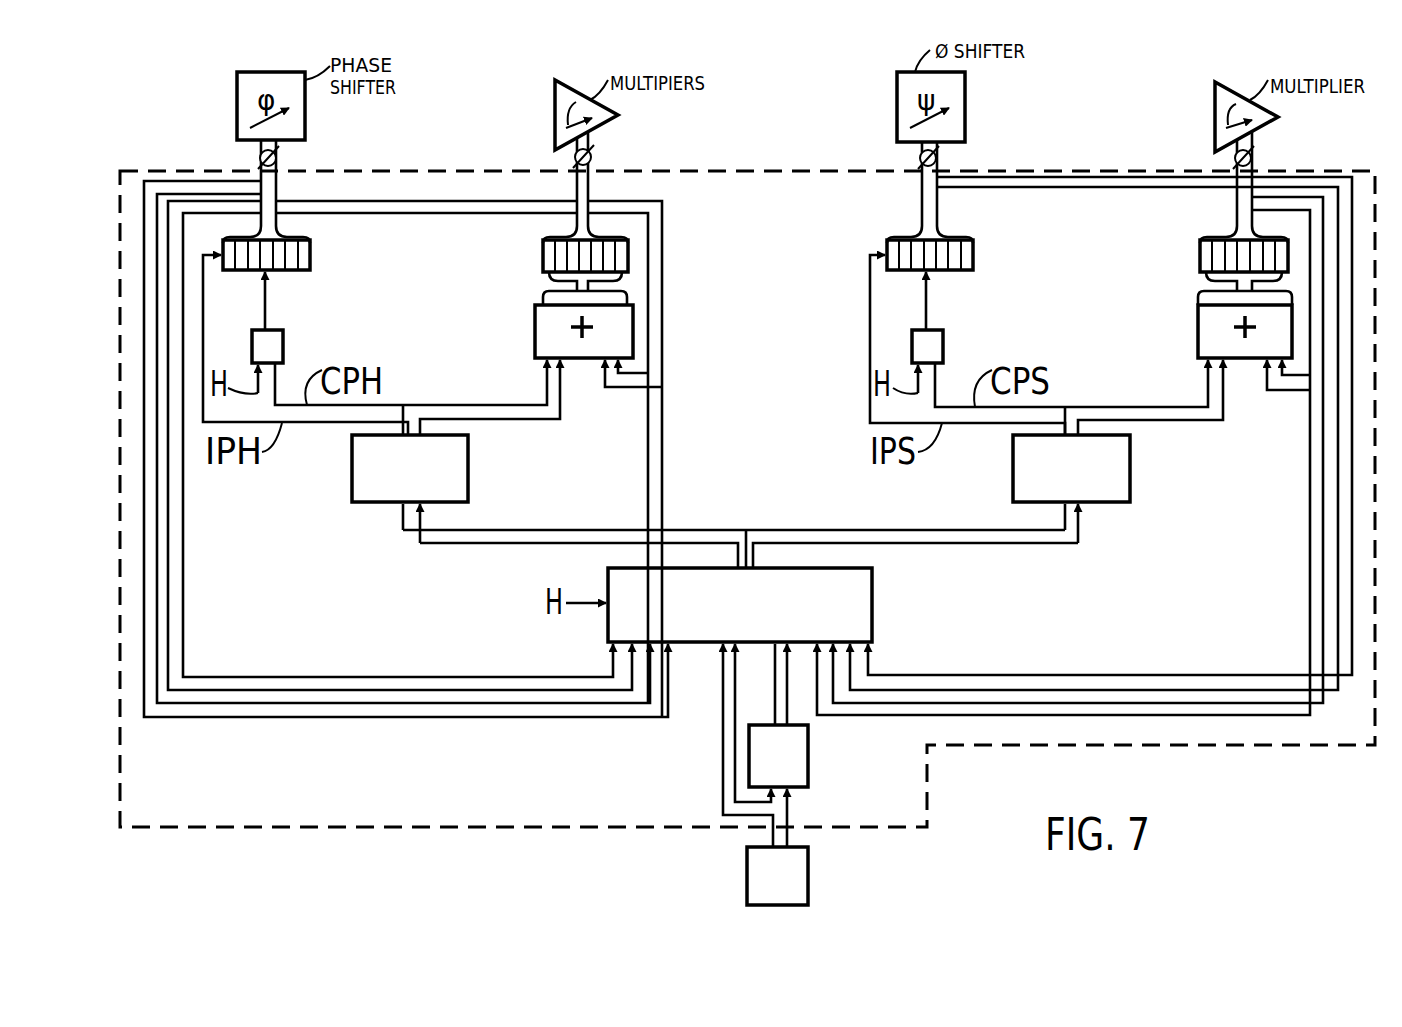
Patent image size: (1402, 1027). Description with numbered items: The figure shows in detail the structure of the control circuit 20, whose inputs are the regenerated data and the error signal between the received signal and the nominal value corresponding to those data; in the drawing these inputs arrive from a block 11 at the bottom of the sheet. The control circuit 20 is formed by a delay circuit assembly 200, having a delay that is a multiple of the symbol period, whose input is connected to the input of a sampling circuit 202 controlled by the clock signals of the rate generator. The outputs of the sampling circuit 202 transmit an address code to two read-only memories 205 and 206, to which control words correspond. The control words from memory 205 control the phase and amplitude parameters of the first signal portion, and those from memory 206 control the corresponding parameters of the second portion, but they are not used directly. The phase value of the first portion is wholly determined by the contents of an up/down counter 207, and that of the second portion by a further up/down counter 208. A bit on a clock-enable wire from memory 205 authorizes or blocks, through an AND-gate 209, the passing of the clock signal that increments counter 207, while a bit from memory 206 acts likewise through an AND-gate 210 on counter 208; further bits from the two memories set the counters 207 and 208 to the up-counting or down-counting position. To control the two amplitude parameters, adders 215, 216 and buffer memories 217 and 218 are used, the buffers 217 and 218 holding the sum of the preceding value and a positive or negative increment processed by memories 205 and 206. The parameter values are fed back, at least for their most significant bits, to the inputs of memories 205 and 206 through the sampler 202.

The control circuit 20 is at (443, 884).
The clock generator 11 is at (808, 885).
The delay circuit assembly 200 is at (808, 768).
The sampling circuit 202 is at (872, 605).
The read-only memory 205 is at (468, 472).
The read-only memory 206 is at (1130, 472).
The up/down counter 207 is at (310, 258).
The up/down counter 208 is at (973, 258).
The AND-gate 209 is at (284, 344).
The AND-gate 210 is at (944, 344).
The adder 215 is at (535, 330).
The adder 216 is at (1198, 330).
The buffer memory 217 is at (543, 259).
The buffer memory 218 is at (1200, 259).